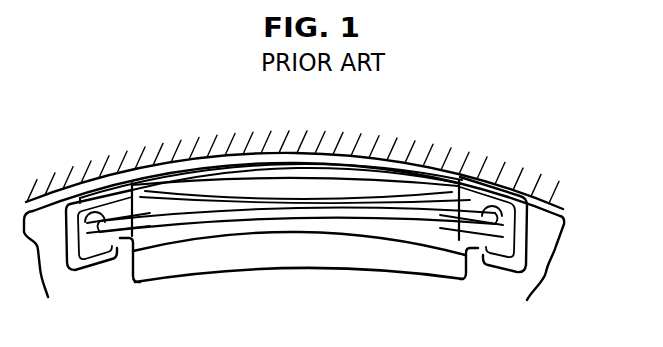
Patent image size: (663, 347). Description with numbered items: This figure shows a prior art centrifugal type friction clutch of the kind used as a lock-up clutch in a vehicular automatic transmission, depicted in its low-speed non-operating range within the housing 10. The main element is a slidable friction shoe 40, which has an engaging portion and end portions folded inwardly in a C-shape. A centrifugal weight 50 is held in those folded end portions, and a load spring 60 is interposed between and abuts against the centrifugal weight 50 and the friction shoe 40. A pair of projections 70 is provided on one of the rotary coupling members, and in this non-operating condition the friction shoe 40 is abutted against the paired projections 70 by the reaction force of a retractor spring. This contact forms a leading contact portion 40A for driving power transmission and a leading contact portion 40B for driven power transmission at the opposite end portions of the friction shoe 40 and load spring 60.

The housing 10 is at (523, 265).
The friction shoe 40 is at (290, 172).
The leading contact portion 40A is at (452, 192).
The leading contact portion 40B is at (133, 197).
The centrifugal weight 50 is at (276, 214).
The load spring 60 is at (401, 193).
The projections 70 is at (513, 216).